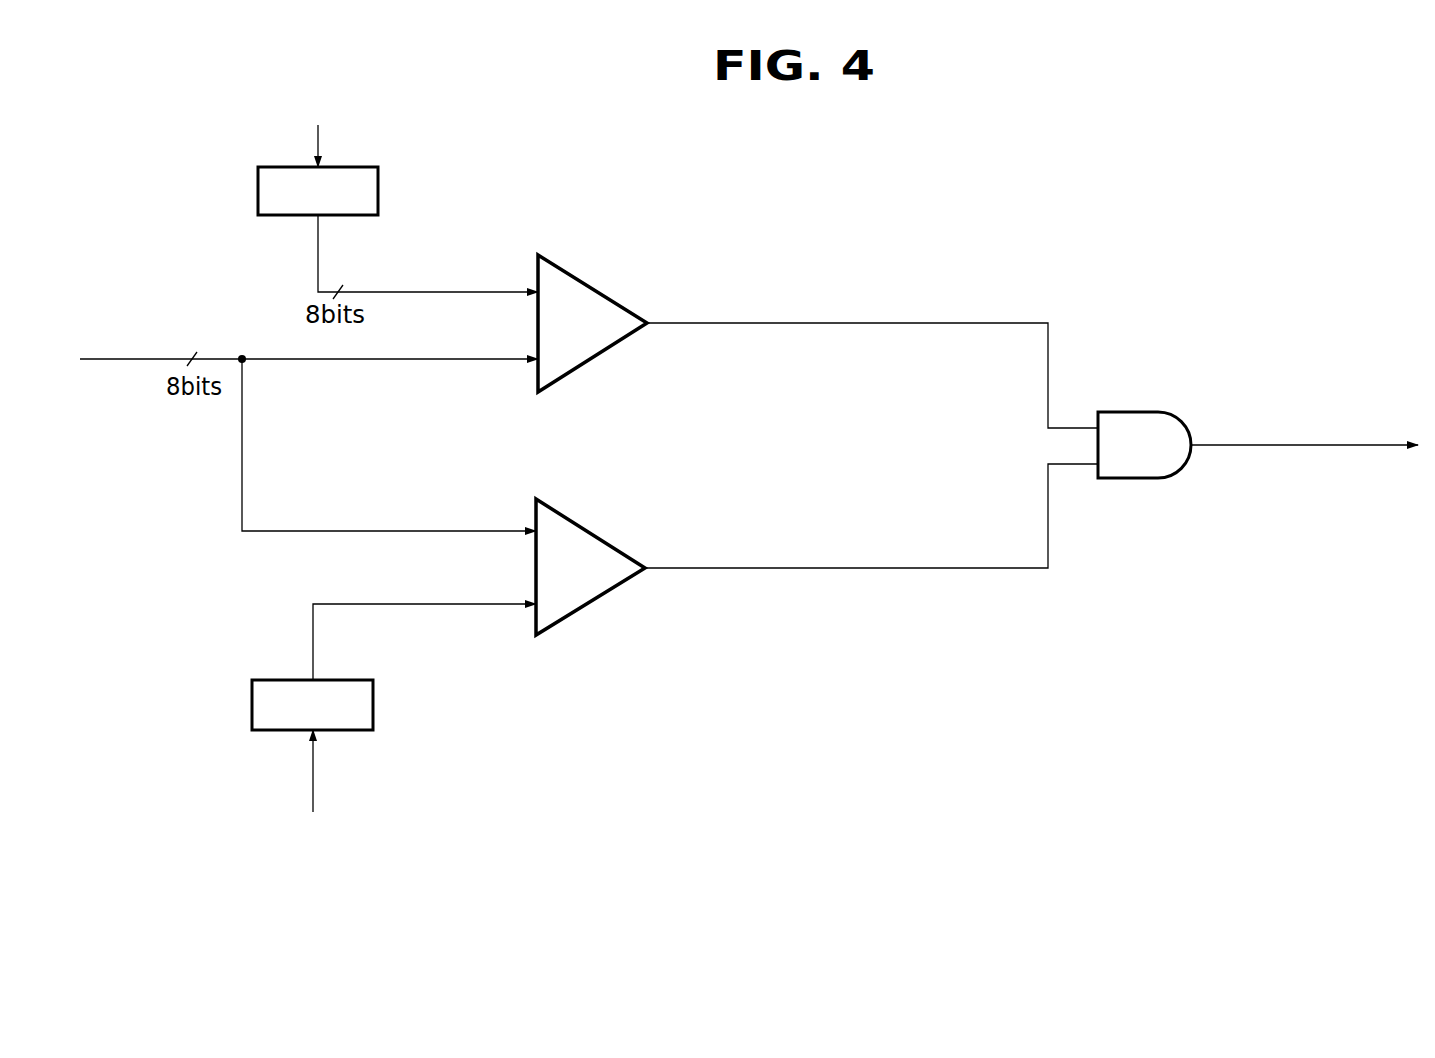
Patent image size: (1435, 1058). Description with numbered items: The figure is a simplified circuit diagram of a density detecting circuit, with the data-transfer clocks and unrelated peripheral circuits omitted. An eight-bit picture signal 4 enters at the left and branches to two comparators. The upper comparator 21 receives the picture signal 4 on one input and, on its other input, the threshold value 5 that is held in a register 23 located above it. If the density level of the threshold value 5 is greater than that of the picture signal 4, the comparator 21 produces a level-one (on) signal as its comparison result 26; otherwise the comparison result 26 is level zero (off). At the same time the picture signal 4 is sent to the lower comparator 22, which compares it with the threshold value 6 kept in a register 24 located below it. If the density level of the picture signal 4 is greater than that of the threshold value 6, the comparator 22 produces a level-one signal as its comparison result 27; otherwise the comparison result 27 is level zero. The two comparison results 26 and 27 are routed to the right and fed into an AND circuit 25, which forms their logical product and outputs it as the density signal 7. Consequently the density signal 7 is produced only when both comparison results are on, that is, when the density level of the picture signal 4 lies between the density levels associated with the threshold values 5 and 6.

The picture signal 4 is at (300, 413).
The threshold value 5 is at (321, 112).
The threshold value 6 is at (310, 806).
The density signal 7 is at (1355, 447).
The comparator 21 is at (575, 270).
The comparator 22 is at (595, 536).
The register 23 is at (378, 185).
The register 24 is at (373, 710).
The AND circuit 25 is at (1165, 412).
The comparison result 26 is at (730, 322).
The comparison result 27 is at (925, 570).